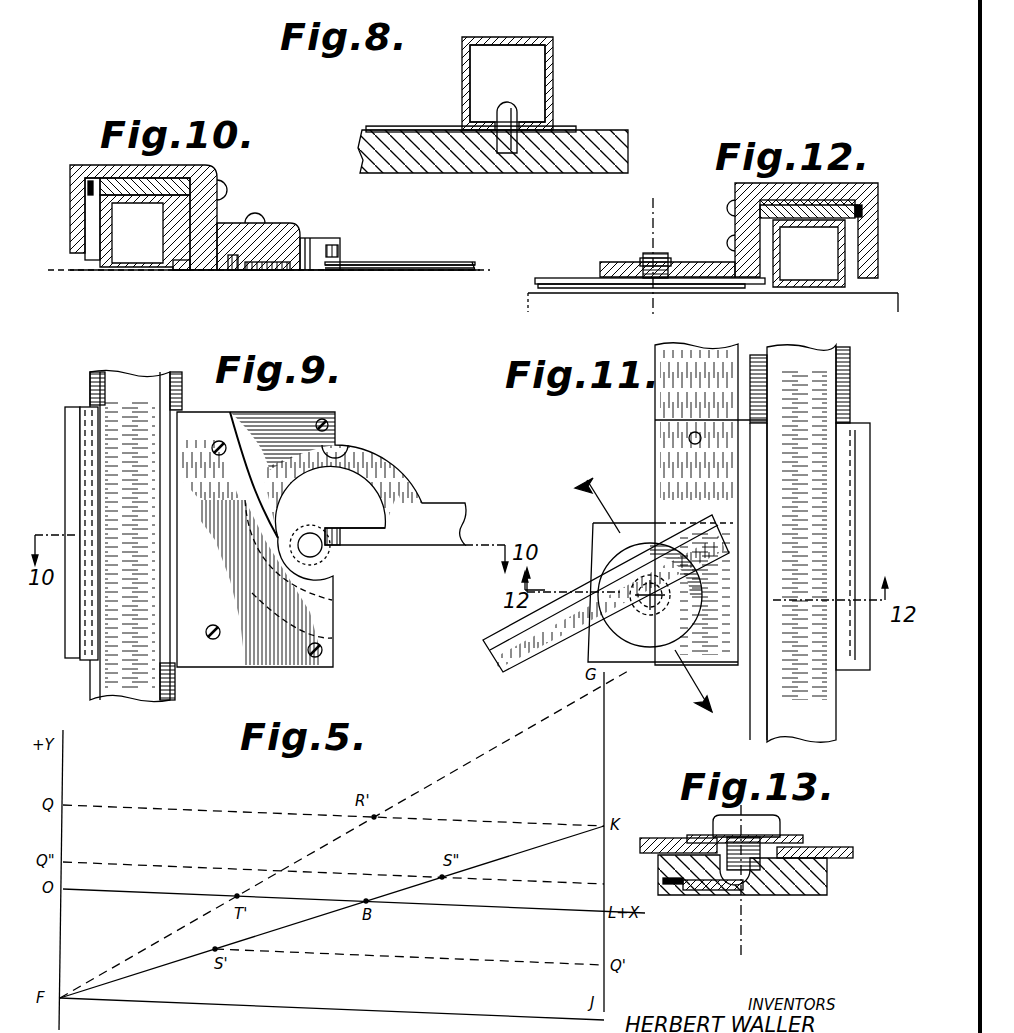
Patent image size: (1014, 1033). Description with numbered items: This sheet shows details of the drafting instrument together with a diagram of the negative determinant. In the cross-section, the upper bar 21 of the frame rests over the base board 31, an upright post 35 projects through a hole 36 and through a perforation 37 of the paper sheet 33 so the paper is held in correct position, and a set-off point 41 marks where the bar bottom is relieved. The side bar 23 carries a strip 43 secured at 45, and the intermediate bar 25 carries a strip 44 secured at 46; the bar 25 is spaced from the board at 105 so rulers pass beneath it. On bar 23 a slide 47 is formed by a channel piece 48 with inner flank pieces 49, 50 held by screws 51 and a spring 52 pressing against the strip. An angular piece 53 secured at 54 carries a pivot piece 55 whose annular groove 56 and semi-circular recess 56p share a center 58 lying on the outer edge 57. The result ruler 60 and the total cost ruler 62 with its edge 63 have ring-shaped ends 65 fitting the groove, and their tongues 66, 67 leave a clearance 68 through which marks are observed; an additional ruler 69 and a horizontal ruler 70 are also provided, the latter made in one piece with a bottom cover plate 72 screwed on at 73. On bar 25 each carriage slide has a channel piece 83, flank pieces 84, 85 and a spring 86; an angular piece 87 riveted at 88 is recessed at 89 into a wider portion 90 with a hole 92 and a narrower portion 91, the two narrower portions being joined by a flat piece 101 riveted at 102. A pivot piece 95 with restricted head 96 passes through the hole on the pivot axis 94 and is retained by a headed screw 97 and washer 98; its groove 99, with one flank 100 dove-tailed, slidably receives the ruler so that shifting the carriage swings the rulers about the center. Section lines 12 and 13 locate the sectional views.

In FIG. 8, the upper bar 21 is at (500, 38).
In FIG. 10, the side bar 23 is at (128, 262).
In FIG. 9, the side bar 23 is at (132, 372).
In FIG. 12, the intermediate bar 25 is at (784, 248).
In FIG. 11, the intermediate bar 25 is at (793, 544).
In FIG. 8, the base board 31 is at (627, 142).
In FIG. 12, the base board 31 is at (545, 288).
In FIG. 8, the paper sheet 33 is at (566, 127).
In FIG. 8, the upright post 35 is at (503, 133).
In FIG. 8, the hole 36 is at (485, 122).
In FIG. 8, the perforation 37 is at (528, 143).
In FIG. 8, the set-off point 41 is at (828, 6).
In FIG. 10, the strip 43 is at (218, 180).
In FIG. 9, the strip 43 is at (176, 686).
In FIG. 12, the strip 44 is at (872, 185).
In FIG. 11, the strip 44 is at (852, 383).
In FIG. 10, the securing point 45 is at (188, 178).
In FIG. 12, the securing point 46 is at (806, 202).
In FIG. 10, the slide 47 is at (226, 190).
In FIG. 10, the channel piece 48 is at (130, 166).
In FIG. 9, the channel piece 48 is at (180, 412).
In FIG. 10, the inner flank piece 49 is at (95, 255).
In FIG. 9, the inner flank piece 49 is at (82, 407).
In FIG. 10, the inner flank piece 50 is at (180, 271).
In FIG. 9, the inner flank piece 50 is at (176, 410).
In FIG. 10, the screw 51 is at (72, 218).
In FIG. 10, the spring 52 is at (75, 178).
In FIG. 9, the spring 52 is at (68, 470).
In FIG. 10, the angular piece 53 is at (280, 234).
In FIG. 10, the securing point 54 is at (262, 222).
In FIG. 10, the pivot piece 55 is at (322, 240).
In FIG. 9, the pivot piece 55 is at (292, 422).
In FIG. 10, the annular groove 56 is at (264, 272).
In FIG. 9, the annular groove 56 is at (340, 450).
In FIG. 10, the semi-circular recess 56p is at (342, 250).
In FIG. 9, the semi-circular recess 56p is at (318, 540).
In FIG. 10, the outer edge 57 is at (350, 263).
In FIG. 9, the outer edge 57 is at (335, 612).
In FIG. 9, the center 58 is at (340, 540).
In FIG. 10, the result ruler 60 is at (462, 264).
In FIG. 10, the ruler 62 is at (430, 272).
In FIG. 12, the ruler 62 is at (562, 282).
In FIG. 9, the ruler 62 is at (456, 515).
In FIG. 11, the ruler 62 is at (522, 652).
In FIG. 13, the ruler 62 is at (700, 895).
In FIG. 9, the ruling edge 63 is at (433, 548).
In FIG. 9, the arcuate arm 65 is at (388, 472).
In FIG. 9, the tongue 66 is at (311, 534).
In FIG. 9, the tongue 67 is at (380, 550).
In FIG. 9, the clearance 68 is at (375, 515).
In FIG. 10, the additional ruler 69 is at (443, 263).
In FIG. 10, the horizontal ruler 70 is at (453, 272).
In FIG. 9, the bottom cover plate 72 is at (214, 428).
In FIG. 10, the screw location 73 is at (240, 270).
In FIG. 9, the screw location 73 is at (300, 655).
In FIG. 12, the channel piece 83 is at (840, 198).
In FIG. 11, the channel piece 83 is at (866, 472).
In FIG. 12, the inner flank piece 84 is at (878, 262).
In FIG. 11, the inner flank piece 84 is at (858, 432).
In FIG. 12, the inner flank piece 85 is at (760, 290).
In FIG. 12, the spring 86 is at (866, 210).
In FIG. 11, the spring 86 is at (854, 532).
In FIG. 12, the angular piece 87 is at (734, 230).
In FIG. 11, the angular piece 87 is at (735, 665).
In FIG. 12, the rivet 88 is at (730, 208).
In FIG. 11, the recess 89 is at (655, 518).
In FIG. 12, the wider portion 90 is at (605, 262).
In FIG. 11, the wider portion 90 is at (678, 650).
In FIG. 13, the wider portion 90 is at (820, 848).
In FIG. 11, the narrower portion 91 is at (665, 492).
In FIG. 13, the hole 92 is at (690, 838).
In FIG. 12, the pivot axis 94 is at (638, 252).
In FIG. 11, the pivot axis 94 is at (645, 608).
In FIG. 13, the pivot axis 94 is at (748, 933).
In FIG. 12, the pivot piece 95 is at (622, 285).
In FIG. 11, the pivot piece 95 is at (648, 665).
In FIG. 13, the pivot piece 95 is at (828, 880).
In FIG. 13, the restricted head 96 is at (800, 840).
In FIG. 12, the headed screw 97 is at (660, 254).
In FIG. 13, the headed screw 97 is at (752, 818).
In FIG. 13, the washer 98 is at (700, 835).
In FIG. 11, the groove 99 is at (625, 632).
In FIG. 13, the groove 99 is at (725, 892).
In FIG. 13, the groove flank 100 is at (668, 878).
In FIG. 11, the flat piece 101 is at (660, 400).
In FIG. 11, the rivet 102 is at (698, 444).
In FIG. 12, the spacing 105 is at (795, 290).
In FIG. 11, the section line 12— 12 is at (516, 601).
In FIG. 11, the section line 13— 13 is at (646, 595).